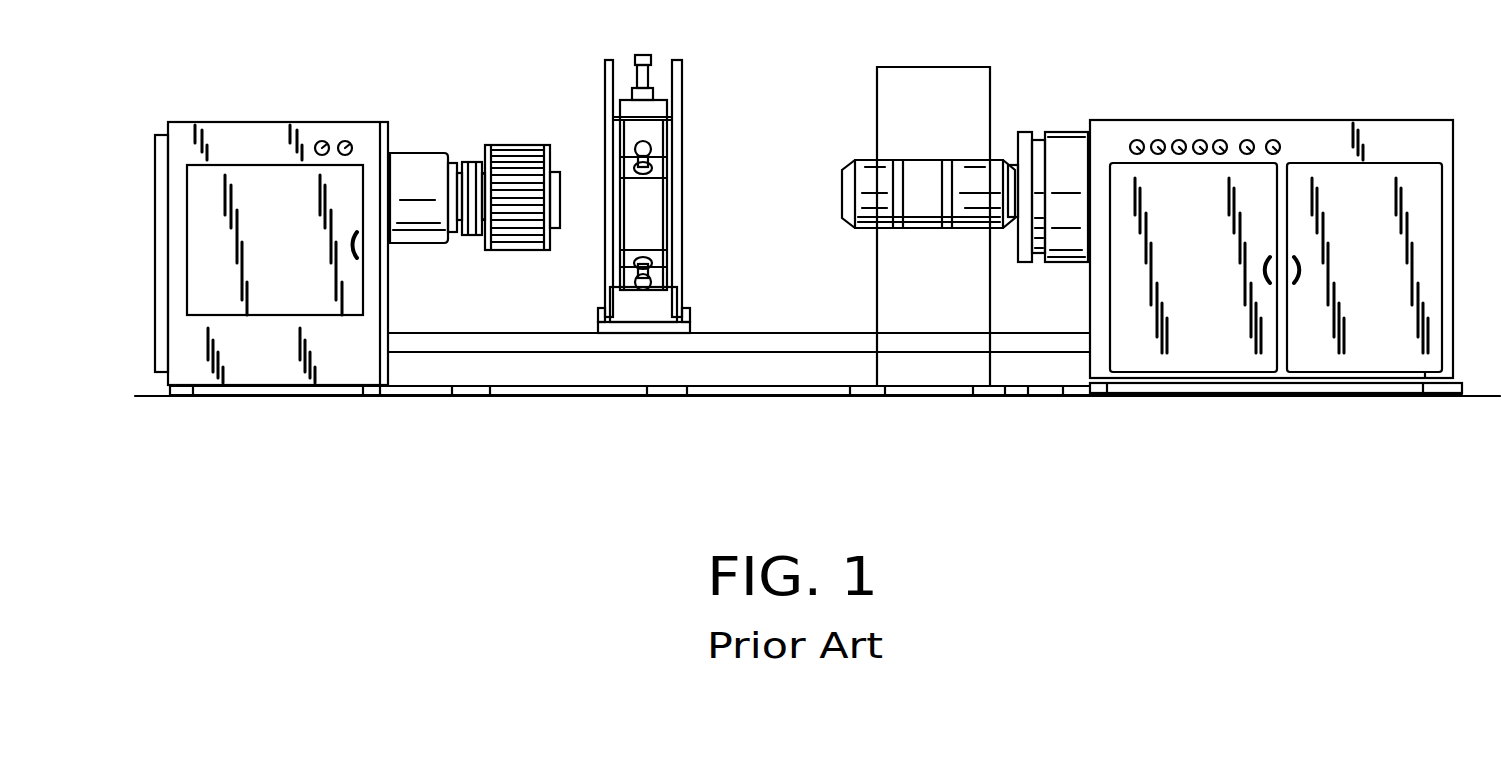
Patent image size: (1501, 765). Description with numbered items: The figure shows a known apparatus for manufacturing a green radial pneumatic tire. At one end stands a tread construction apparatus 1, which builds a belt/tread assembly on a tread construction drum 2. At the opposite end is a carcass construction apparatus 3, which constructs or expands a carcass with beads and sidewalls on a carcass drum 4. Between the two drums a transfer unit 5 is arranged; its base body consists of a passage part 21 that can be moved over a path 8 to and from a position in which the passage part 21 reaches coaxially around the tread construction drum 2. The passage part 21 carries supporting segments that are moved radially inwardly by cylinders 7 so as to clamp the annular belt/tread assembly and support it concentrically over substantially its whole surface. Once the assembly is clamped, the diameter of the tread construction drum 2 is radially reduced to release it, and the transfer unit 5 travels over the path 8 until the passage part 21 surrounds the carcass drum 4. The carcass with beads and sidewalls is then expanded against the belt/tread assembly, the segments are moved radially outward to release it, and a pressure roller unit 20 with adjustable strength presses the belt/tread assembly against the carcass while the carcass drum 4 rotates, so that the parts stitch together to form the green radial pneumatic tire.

The tread construction apparatus 1 is at (267, 147).
The tread construction drum 2 is at (508, 158).
The carcass construction apparatus 3 is at (1305, 117).
The carcass drum 4 is at (929, 156).
The transfer unit 5 is at (692, 124).
The cylinders 7 is at (637, 78).
The path 8 is at (773, 338).
The pressure roller unit 20 is at (909, 98).
The passage part 21 is at (646, 47).